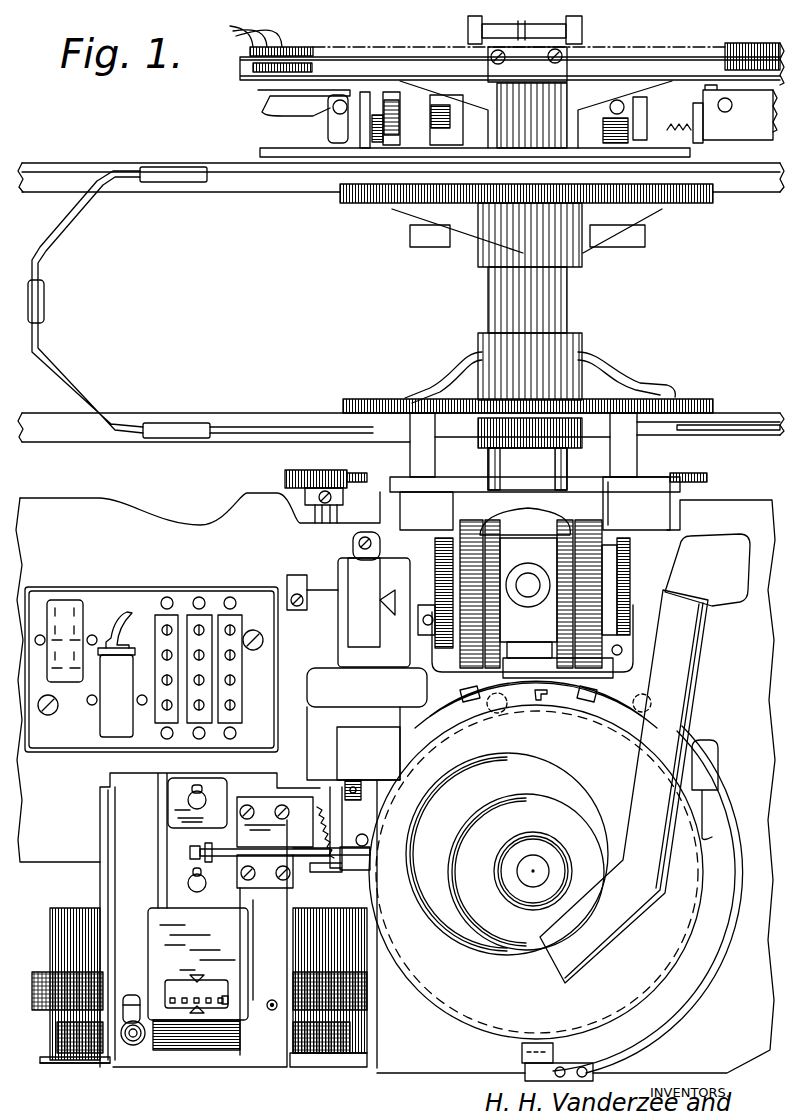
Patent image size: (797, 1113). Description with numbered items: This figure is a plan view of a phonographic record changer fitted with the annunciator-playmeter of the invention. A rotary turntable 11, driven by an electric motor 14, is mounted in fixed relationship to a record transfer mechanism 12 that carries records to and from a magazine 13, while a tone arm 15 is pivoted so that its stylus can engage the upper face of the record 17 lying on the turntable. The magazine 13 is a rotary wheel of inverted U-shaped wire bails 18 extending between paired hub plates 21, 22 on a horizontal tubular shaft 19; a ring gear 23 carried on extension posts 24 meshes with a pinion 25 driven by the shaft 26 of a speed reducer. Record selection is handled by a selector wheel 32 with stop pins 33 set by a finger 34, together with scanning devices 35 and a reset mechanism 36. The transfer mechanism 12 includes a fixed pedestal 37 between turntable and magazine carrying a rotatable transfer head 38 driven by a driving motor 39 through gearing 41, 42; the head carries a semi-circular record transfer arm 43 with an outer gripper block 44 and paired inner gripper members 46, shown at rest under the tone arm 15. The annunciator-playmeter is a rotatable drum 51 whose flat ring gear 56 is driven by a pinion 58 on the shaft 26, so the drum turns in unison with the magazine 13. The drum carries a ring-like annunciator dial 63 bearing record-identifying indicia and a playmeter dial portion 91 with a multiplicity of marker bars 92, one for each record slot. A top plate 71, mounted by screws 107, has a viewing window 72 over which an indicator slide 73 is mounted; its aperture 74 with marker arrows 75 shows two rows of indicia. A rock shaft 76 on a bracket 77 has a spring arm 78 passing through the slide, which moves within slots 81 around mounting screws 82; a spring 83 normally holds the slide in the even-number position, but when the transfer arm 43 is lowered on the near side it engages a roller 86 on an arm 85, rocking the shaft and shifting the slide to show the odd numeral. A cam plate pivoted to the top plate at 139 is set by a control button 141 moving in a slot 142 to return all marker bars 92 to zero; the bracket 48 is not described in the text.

The rotary turntable 11 is at (453, 1010).
The record transfer mechanism 12 is at (695, 504).
The magazine 13 is at (226, 455).
The electric motor 14 is at (712, 737).
The tone arm 15 is at (648, 895).
The record 17 is at (490, 977).
The inverted U-shaped wire bails 18 is at (72, 387).
The horizontal tubular shaft 19 is at (528, 468).
The hub plate 21 is at (472, 227).
The hub plate 22 is at (433, 385).
The ring gear 23 is at (705, 478).
The extension posts 24 is at (410, 455).
The pinion 25 is at (296, 475).
The shaft 26 is at (323, 517).
The selector wheel 32 is at (240, 58).
The stop pins 33 is at (246, 38).
The finger 34 is at (520, 26).
The scanning devices 35 is at (315, 103).
The reset mechanism 36 is at (443, 105).
The fixed pedestal 37 is at (587, 612).
The rotatable transfer head 38 is at (535, 555).
The driving motor 39 is at (365, 588).
The gearing 41 is at (632, 556).
The gearing 42 is at (445, 536).
The semi-circular record transfer arm 43 is at (716, 800).
The outer gripper block 44 is at (525, 1052).
The inner gripper members 46 is at (685, 658).
The bracket 48 is at (523, 1077).
The rotatable drum 51 is at (74, 1075).
The flat ring gear 56 is at (48, 1060).
The pinion 58 is at (363, 1067).
The annunciator dial 63 is at (32, 1010).
The top plate 71 is at (267, 1050).
The viewing window 72 is at (225, 1040).
The indicator slide 73 is at (160, 942).
The aperture 74 is at (227, 1000).
The marker arrows 75 is at (200, 975).
The rock shaft 76 is at (270, 855).
The bracket 77 is at (275, 822).
The spring arm 78 is at (190, 852).
The slots 81 is at (197, 790).
The mounting screws 82 is at (200, 795).
The spring 83 is at (314, 832).
The arm 85 is at (373, 813).
The roller 86 is at (352, 787).
The playmeter dial portion 91 is at (45, 1023).
The marker bars 92 is at (208, 970).
The screws 107 is at (282, 805).
The pivot 139 is at (272, 1000).
The control button 141 is at (133, 1045).
The slot 142 is at (132, 993).